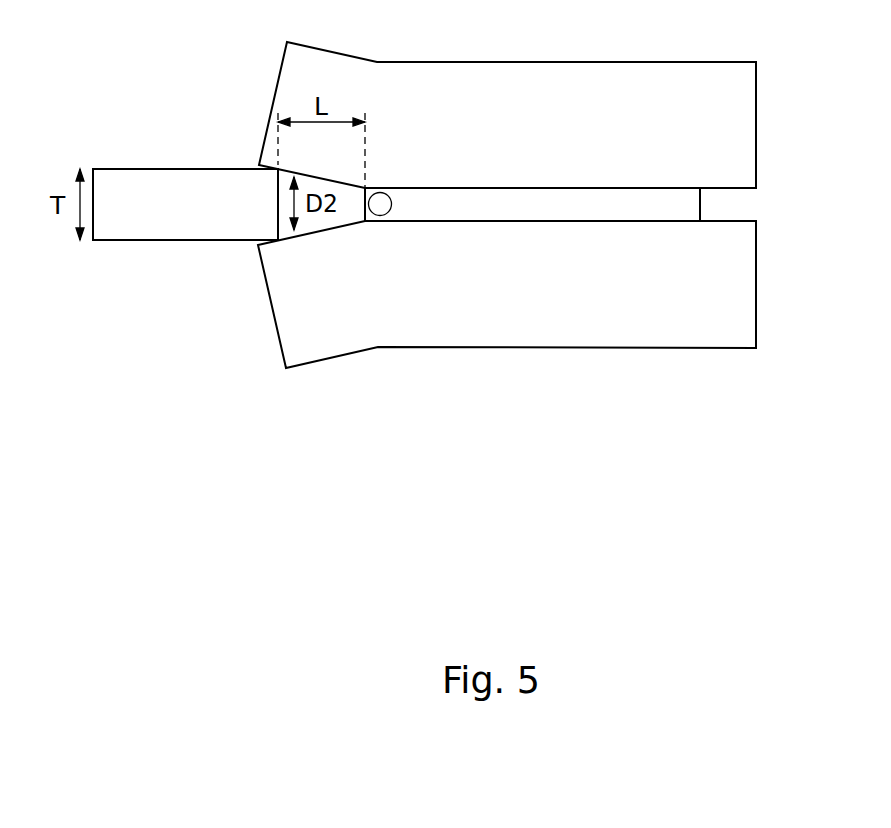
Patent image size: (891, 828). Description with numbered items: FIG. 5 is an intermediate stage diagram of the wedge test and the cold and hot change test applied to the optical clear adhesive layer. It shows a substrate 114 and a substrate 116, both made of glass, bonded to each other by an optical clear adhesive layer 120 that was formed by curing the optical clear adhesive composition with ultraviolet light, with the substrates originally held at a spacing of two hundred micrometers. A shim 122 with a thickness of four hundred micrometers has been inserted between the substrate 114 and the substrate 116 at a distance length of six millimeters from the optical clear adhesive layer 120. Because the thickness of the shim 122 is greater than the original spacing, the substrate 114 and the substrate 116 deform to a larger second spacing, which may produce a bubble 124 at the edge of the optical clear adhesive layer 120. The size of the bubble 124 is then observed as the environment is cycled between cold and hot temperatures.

The substrate 114 is at (747, 293).
The substrate 116 is at (747, 120).
The optical clear adhesive layer 120 is at (683, 203).
The shim 122 is at (157, 183).
The bubble 124 is at (380, 216).